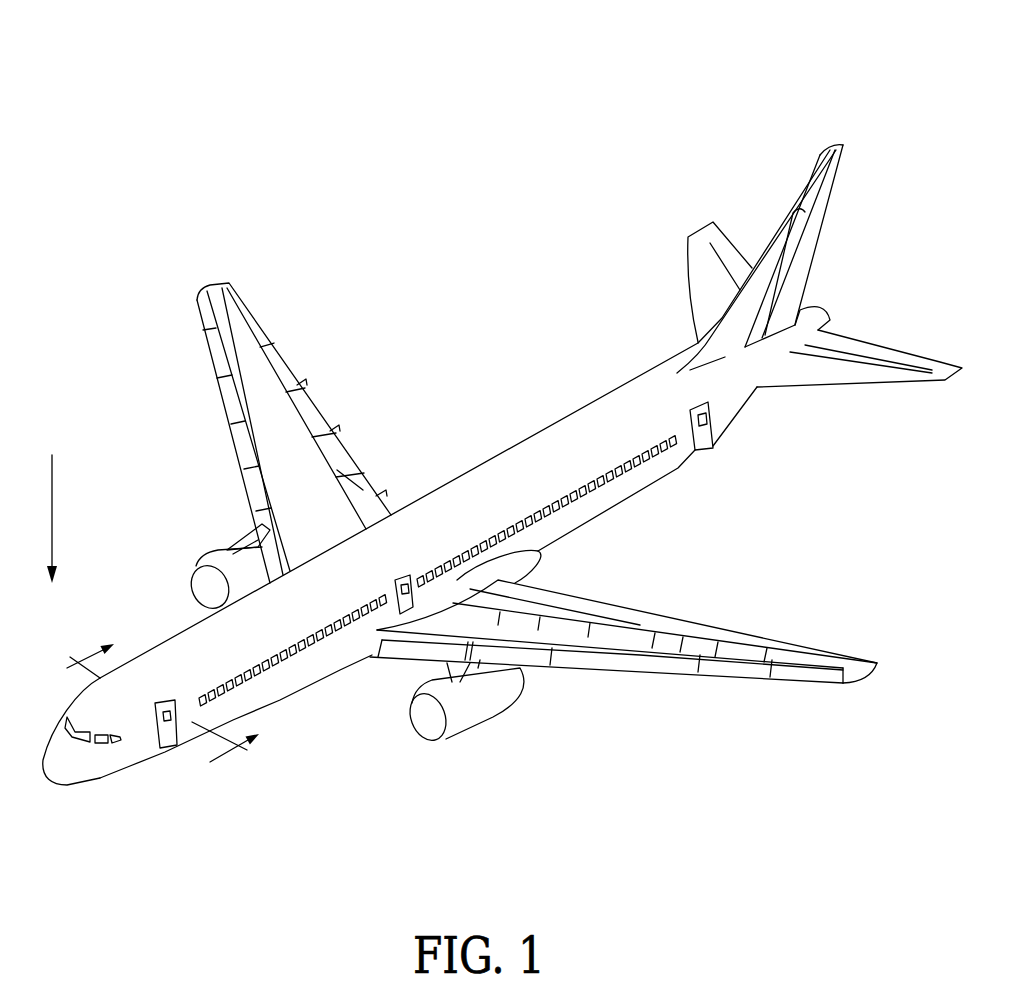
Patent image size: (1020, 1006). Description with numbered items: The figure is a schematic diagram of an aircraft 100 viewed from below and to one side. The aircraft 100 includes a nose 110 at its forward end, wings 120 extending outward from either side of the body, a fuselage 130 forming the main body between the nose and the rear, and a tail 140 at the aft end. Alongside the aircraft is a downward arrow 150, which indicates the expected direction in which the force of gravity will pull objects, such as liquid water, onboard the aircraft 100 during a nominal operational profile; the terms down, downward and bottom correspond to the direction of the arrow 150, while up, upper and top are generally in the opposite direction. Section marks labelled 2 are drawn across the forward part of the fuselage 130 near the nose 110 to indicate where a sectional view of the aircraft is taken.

The aircraft 100 is at (438, 401).
The nose 110 is at (73, 800).
The wings 120 is at (237, 275).
The fuselage 130 is at (614, 502).
The tail 140 is at (850, 135).
The downward arrow 150 is at (52, 495).
The section line for FIG. 2 is at (151, 717).